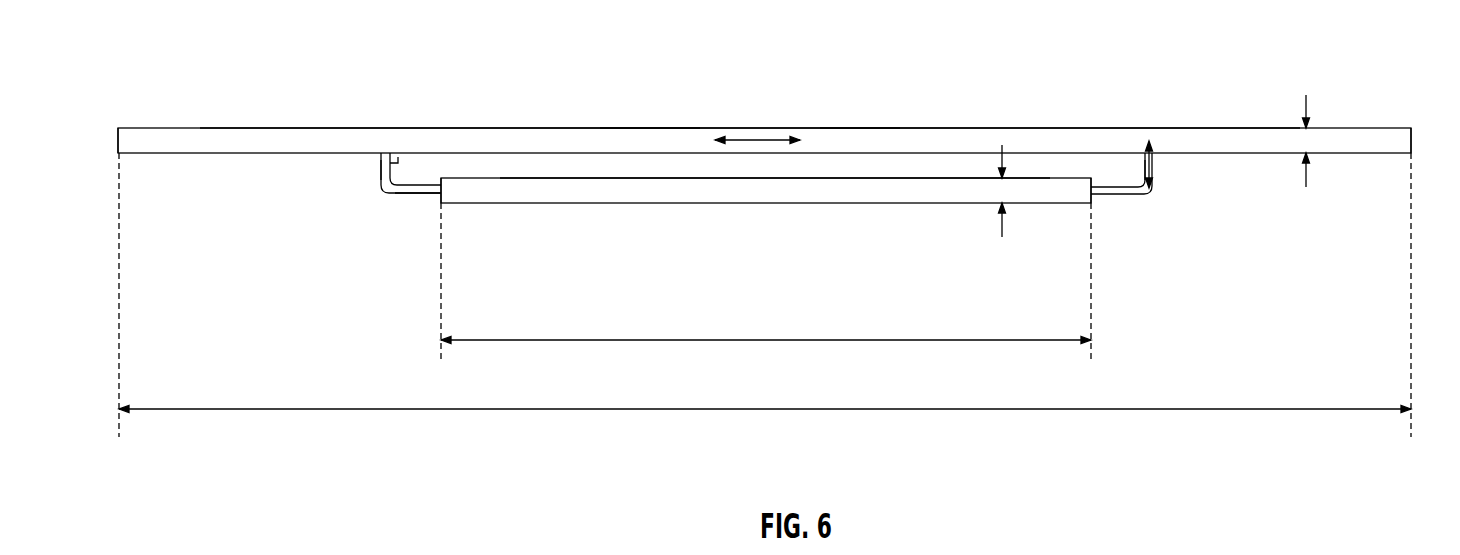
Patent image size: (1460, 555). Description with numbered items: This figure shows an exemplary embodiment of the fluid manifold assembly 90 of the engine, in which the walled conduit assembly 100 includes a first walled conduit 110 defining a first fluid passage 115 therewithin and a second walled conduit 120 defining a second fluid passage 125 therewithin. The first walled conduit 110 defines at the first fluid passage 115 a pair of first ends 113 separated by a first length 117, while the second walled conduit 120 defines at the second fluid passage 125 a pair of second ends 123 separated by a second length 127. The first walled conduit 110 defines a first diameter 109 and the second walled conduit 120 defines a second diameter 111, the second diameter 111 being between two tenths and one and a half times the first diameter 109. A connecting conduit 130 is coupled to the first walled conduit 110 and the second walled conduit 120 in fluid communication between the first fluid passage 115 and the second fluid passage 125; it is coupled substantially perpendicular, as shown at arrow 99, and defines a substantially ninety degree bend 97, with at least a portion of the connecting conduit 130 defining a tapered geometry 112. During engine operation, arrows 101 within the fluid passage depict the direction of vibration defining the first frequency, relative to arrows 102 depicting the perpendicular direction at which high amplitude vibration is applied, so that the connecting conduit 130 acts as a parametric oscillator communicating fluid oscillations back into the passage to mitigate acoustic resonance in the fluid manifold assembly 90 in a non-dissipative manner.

The fluid manifold assembly 90 is at (871, 72).
The walled conduit assembly 100 is at (661, 88).
The arrows depicting direction of vibration 101 is at (745, 140).
The substantially 90 degree bend 97 is at (763, 114).
The arrow showing perpendicular coupling 99 is at (399, 163).
The arrows depicting perpendicular vibration direction 102 is at (1155, 158).
The first diameter 109 is at (1308, 106).
The first walled conduit 110 is at (285, 128).
The second diameter 111 is at (1005, 228).
The tapered geometry 112 is at (374, 217).
The first ends 113 is at (767, 149).
The first fluid passage 115 is at (452, 134).
The first length 117 is at (650, 409).
The second walled conduit 120 is at (517, 205).
The second ends 123 is at (779, 239).
The second fluid passage 125 is at (833, 192).
The second length 127 is at (755, 340).
The connecting conduit 130 is at (380, 173).